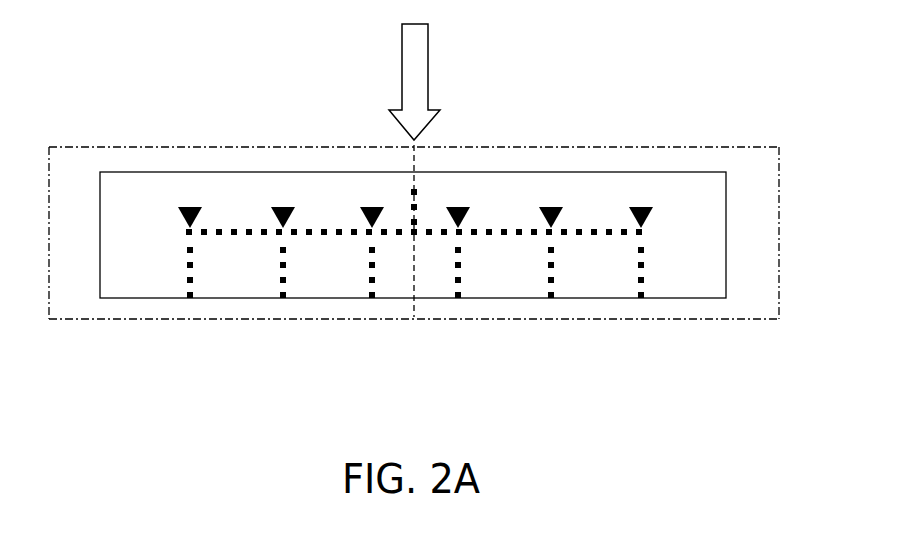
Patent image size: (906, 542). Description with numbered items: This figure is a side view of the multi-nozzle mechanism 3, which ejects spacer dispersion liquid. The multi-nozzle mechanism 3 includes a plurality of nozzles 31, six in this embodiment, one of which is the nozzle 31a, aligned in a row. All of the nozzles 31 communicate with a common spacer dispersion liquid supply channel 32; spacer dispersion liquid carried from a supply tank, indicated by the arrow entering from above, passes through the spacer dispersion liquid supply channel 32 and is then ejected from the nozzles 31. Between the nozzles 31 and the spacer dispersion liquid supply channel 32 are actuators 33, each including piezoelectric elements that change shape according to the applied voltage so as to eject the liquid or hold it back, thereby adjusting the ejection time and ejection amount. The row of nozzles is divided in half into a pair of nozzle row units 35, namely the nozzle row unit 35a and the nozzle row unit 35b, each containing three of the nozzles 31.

The multi-nozzle mechanism 3 is at (615, 171).
The nozzles 31 is at (383, 304).
The nozzle 31a is at (165, 298).
The spacer dispersion liquid supply channel 32 is at (419, 191).
The actuators 33 is at (372, 207).
The nozzle row units 35 is at (414, 201).
The nozzle row unit 35a is at (120, 146).
The nozzle row unit 35b is at (729, 146).